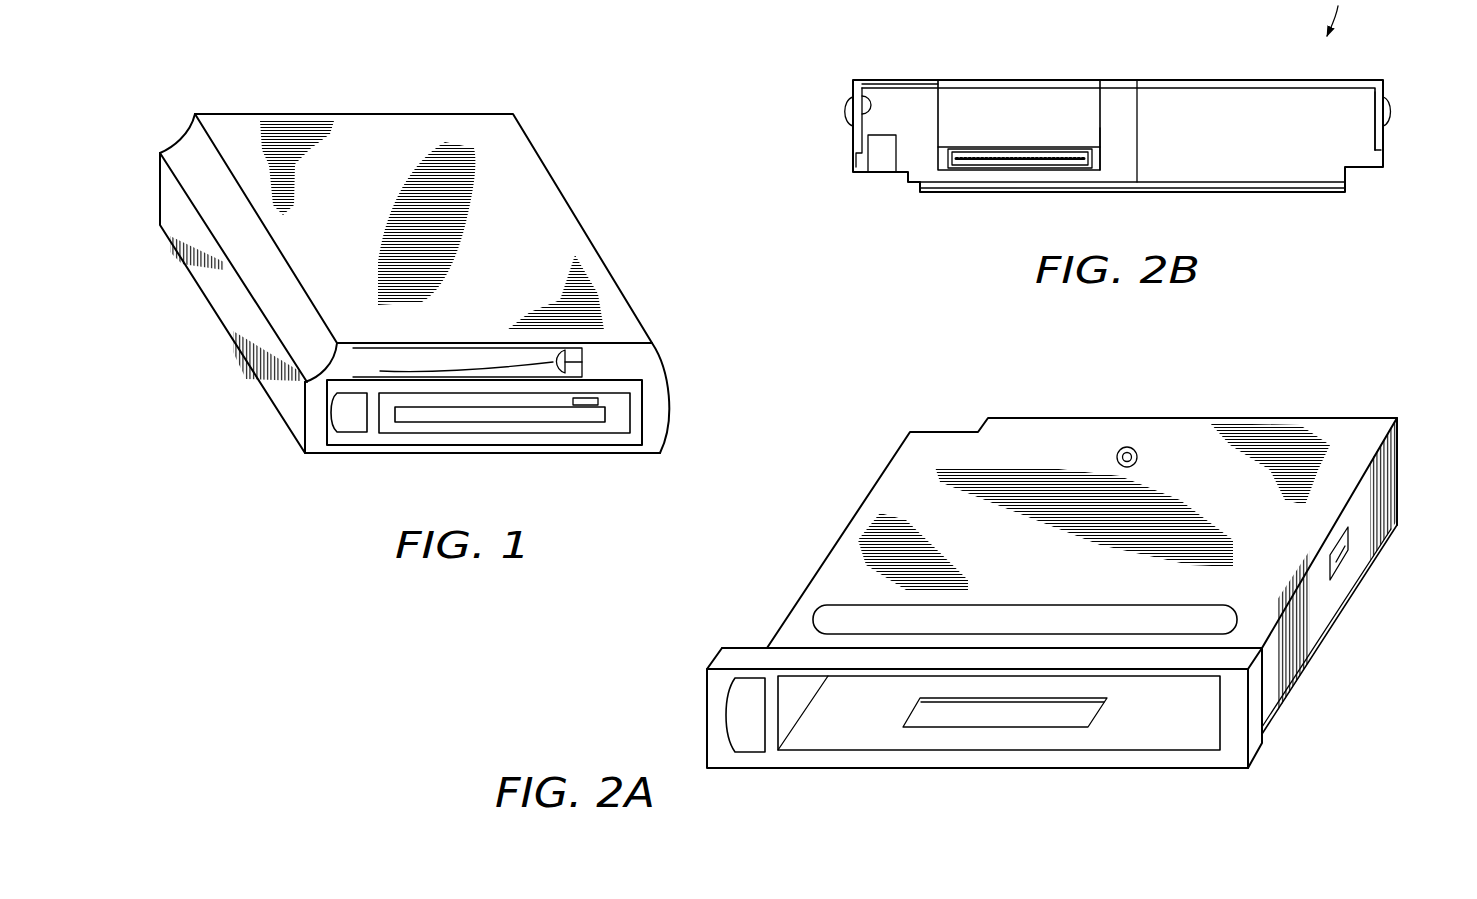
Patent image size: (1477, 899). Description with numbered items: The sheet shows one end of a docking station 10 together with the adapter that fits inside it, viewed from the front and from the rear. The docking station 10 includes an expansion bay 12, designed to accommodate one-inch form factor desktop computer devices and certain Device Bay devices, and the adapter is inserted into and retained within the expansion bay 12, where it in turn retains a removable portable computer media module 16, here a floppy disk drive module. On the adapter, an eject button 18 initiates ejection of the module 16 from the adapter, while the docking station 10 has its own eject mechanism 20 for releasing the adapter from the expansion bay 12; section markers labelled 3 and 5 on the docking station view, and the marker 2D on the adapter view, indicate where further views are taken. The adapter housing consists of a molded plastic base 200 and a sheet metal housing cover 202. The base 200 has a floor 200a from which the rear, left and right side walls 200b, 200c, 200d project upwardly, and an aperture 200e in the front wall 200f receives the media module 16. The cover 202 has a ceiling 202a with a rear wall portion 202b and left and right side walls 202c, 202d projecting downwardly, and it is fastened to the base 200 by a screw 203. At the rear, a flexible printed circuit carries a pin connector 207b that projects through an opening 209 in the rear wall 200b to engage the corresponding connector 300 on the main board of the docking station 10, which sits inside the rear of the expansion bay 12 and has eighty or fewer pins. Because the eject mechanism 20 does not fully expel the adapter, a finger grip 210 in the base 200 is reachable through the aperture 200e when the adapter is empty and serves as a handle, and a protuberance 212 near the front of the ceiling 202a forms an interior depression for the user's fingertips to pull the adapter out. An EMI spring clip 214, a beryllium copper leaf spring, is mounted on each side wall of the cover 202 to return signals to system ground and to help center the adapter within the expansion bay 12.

In FIG. 1, the docking station 10 is at (624, 238).
In FIG. 1, the expansion bay 12 is at (648, 395).
In FIG. 1, the removable portable computer media module 16 is at (608, 430).
In FIG. 1, the eject button 18 is at (356, 432).
In FIG. 2A, the eject button 18 is at (746, 752).
In FIG. 1, the eject mechanism 20 is at (582, 362).
In FIG. 1, the section line 3- 3 is at (637, 300).
In FIG. 1, the section line 5- 5 is at (260, 473).
In FIG. 2B, the molded plastic base 200 is at (1369, 172).
In FIG. 2B, the floor 200a is at (1265, 193).
In FIG. 2A, the floor 200a is at (1380, 552).
In FIG. 2B, the rear side wall 200b is at (1253, 123).
In FIG. 2A, the rear side wall 200b is at (1398, 443).
In FIG. 2B, the left side wall 200c is at (858, 98).
In FIG. 2B, the right side wall 200d is at (1375, 100).
In FIG. 2A, the aperture 200e is at (1097, 751).
In FIG. 2A, the front wall 200f is at (1240, 769).
In FIG. 2B, the sheet metal housing cover 202 is at (1178, 76).
In FIG. 2A, the sheet metal housing cover 202 is at (1048, 412).
In FIG. 2B, the ceiling 202a is at (883, 78).
In FIG. 2A, the ceiling 202a is at (1225, 495).
In FIG. 2B, the rear wall portion 202b is at (1042, 123).
In FIG. 2B, the left side wall 202c is at (851, 128).
In FIG. 2B, the right side wall 202d is at (1388, 108).
In FIG. 2A, the screw 203 is at (1116, 457).
In FIG. 2B, the pin connector 207b is at (990, 170).
In FIG. 2B, the opening 209 is at (1100, 130).
In FIG. 2A, the finger grip 210 is at (963, 719).
In FIG. 2A, the protuberance 212 is at (1014, 604).
In FIG. 2A, the EMI spring clip 214 is at (1342, 577).
In FIG. 2B, the connector 300 is at (907, 121).
In FIG. 2A, the section line 2D- 2D is at (683, 680).